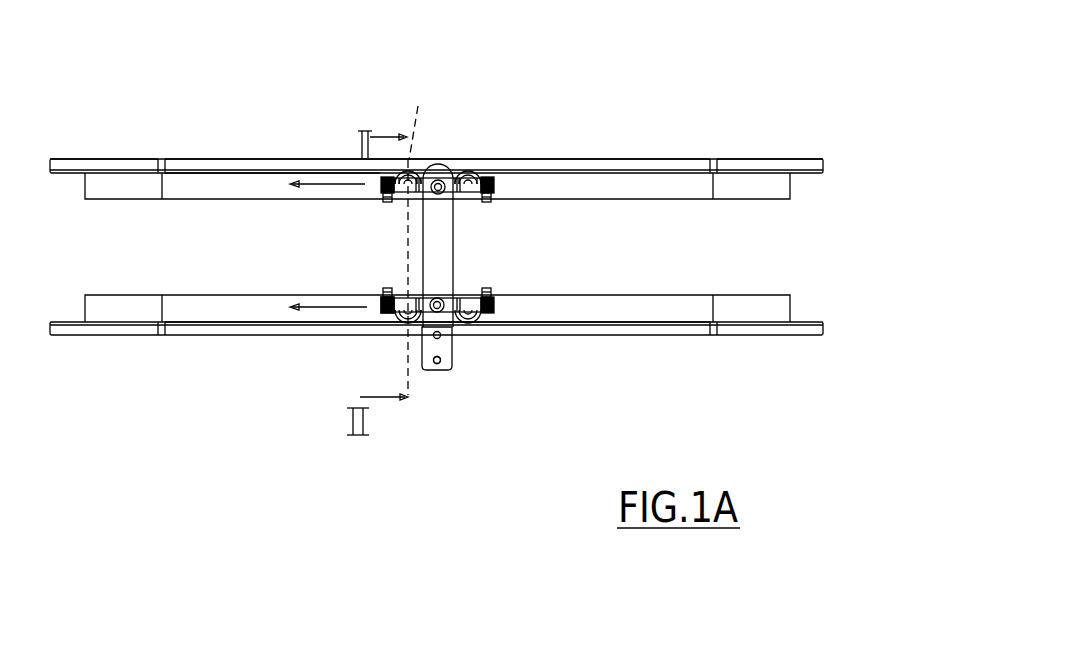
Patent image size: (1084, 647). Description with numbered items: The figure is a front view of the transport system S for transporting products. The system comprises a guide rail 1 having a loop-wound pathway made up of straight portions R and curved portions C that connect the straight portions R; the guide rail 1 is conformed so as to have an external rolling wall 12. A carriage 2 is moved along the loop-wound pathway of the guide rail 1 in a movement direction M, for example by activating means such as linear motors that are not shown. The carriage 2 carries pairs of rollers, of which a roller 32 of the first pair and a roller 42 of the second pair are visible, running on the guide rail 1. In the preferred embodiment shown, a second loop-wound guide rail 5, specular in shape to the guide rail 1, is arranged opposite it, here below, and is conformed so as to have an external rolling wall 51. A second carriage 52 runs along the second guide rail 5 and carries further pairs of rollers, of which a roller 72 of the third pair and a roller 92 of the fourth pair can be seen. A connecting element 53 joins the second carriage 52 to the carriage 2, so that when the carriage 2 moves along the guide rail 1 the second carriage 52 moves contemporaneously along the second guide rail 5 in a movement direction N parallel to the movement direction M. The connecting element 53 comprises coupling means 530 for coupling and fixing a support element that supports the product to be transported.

The transport system S is at (670, 75).
The curved portions C is at (82, 163).
The straight portions R is at (275, 159).
The movement direction M is at (330, 178).
The movement direction N is at (320, 302).
The guide rail 1 is at (613, 176).
The external rolling wall 12 is at (546, 160).
The carriage 2 is at (464, 159).
The roller 32 is at (464, 171).
The roller 42 is at (417, 124).
The second guide rail 5 is at (603, 316).
The external rolling wall 51 is at (652, 320).
The second carriage 52 is at (462, 320).
The connecting element 53 is at (448, 258).
The roller 72 is at (458, 334).
The roller 92 is at (392, 322).
The coupling means 530 is at (437, 364).